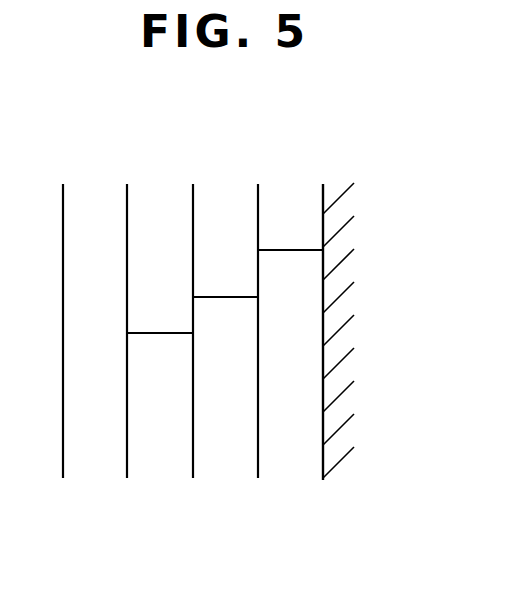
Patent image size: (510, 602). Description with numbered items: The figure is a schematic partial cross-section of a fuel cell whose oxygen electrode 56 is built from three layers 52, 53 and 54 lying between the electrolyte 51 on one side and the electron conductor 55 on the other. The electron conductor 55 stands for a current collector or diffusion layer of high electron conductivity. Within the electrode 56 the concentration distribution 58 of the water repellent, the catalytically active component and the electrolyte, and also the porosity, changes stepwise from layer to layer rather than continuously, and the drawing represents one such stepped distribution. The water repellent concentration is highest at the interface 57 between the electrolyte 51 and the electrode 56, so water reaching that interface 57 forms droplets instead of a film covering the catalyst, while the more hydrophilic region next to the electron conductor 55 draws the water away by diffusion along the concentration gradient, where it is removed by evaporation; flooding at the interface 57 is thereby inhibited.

The electrolyte 51 is at (375, 179).
The electrode layer 52 is at (312, 179).
The electrode layer 53 is at (248, 179).
The electrode layer 54 is at (185, 179).
The electron conductor 55 is at (118, 179).
The electrode 56 is at (320, 485).
The interface 57 is at (330, 487).
The concentration distribution 58 is at (287, 250).